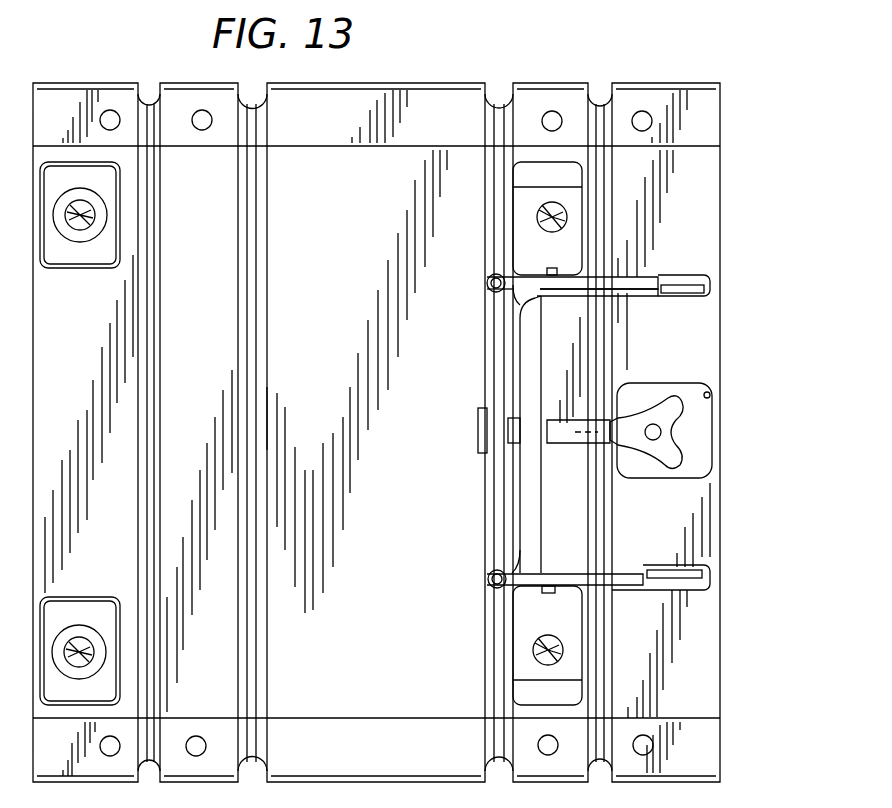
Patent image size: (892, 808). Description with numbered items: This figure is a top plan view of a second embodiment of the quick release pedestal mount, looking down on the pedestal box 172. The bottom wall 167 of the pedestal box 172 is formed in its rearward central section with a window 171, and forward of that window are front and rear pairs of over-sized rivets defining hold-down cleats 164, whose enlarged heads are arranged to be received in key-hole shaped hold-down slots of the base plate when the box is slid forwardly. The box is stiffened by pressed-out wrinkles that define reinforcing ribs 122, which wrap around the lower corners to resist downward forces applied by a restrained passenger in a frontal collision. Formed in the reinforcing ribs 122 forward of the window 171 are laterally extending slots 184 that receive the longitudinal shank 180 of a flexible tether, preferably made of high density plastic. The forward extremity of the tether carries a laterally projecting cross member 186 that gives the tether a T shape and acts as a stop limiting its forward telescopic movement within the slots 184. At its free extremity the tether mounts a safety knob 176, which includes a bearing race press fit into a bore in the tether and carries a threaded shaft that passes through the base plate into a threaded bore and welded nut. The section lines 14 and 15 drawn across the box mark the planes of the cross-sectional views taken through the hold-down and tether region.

The bottom wall 167 is at (710, 214).
The pedestal box 172 is at (341, 240).
The reinforcing ribs 122 is at (610, 640).
The hold-down cleats 164 is at (543, 216).
The longitudinal shank 180 is at (598, 445).
The laterally extending slots 184 is at (513, 445).
The cross member 186 is at (477, 425).
The window 171 is at (712, 388).
The safety knob 176 is at (672, 396).
The section line 14- 14 is at (476, 447).
The section line 15- 15 is at (480, 580).